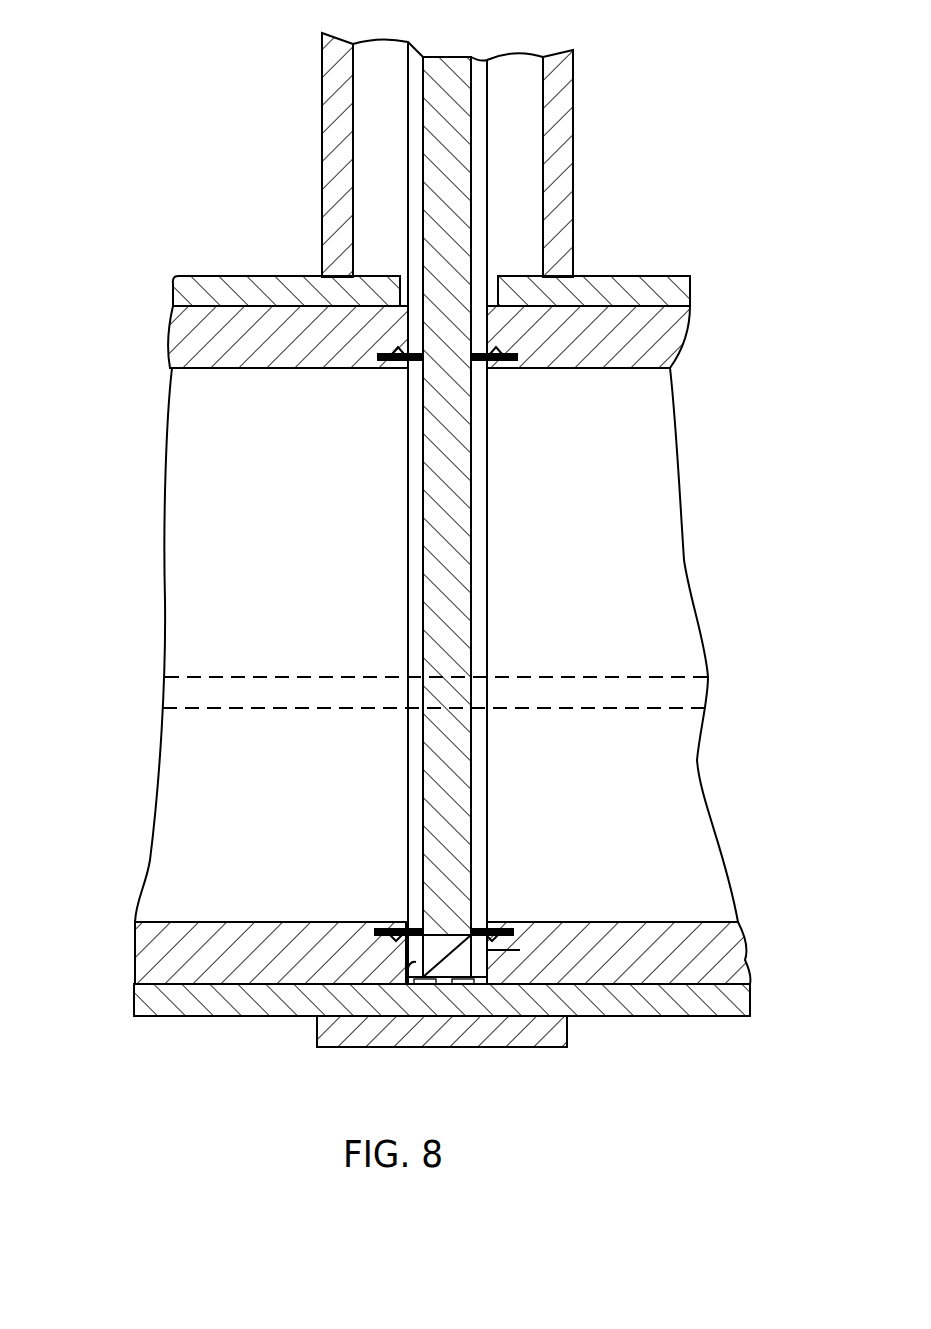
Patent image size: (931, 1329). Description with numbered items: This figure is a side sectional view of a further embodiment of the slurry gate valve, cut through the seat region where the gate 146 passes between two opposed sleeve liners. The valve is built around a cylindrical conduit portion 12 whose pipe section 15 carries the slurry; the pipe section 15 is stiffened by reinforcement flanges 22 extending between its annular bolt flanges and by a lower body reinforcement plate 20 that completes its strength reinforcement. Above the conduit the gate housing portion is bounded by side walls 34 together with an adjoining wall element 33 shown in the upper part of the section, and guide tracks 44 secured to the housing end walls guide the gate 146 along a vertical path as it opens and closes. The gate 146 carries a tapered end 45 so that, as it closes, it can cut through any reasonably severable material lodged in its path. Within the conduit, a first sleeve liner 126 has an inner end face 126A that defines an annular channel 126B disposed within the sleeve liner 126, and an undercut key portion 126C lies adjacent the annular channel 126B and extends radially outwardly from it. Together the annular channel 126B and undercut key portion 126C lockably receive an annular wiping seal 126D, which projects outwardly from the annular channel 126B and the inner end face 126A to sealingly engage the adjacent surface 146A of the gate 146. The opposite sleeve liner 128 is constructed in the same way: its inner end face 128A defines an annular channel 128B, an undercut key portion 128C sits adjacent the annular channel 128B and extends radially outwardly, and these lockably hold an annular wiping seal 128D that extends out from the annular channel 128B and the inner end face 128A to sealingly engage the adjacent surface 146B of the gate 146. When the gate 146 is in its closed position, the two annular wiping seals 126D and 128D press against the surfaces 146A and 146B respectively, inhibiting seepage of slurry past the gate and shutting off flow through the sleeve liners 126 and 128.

The cylindrical conduit portion 12 is at (160, 1024).
The pipe section 15 is at (725, 1018).
The lower body reinforcement plate 20 is at (537, 1002).
The reinforcement flanges 22 is at (655, 677).
The inner tube 33 is at (528, 62).
The side walls 34 is at (322, 125).
The guide tracks 44 is at (481, 70).
The tapered end 45 is at (470, 983).
The sleeve liner 126 is at (150, 965).
The inner end face 126A is at (412, 962).
The annular channel 126B is at (345, 958).
The undercut key portion 126C is at (400, 945).
The annular wiping seal 126D is at (396, 927).
The sleeve liner 128 is at (668, 975).
The inner end face 128A is at (505, 965).
The annular channel 128B is at (512, 936).
The undercut key portion 128C is at (520, 950).
The annular wiping seal 128D is at (487, 930).
The gate 146 is at (447, 66).
The adjacent surface 146A is at (436, 980).
The adjacent surface 146B is at (477, 855).